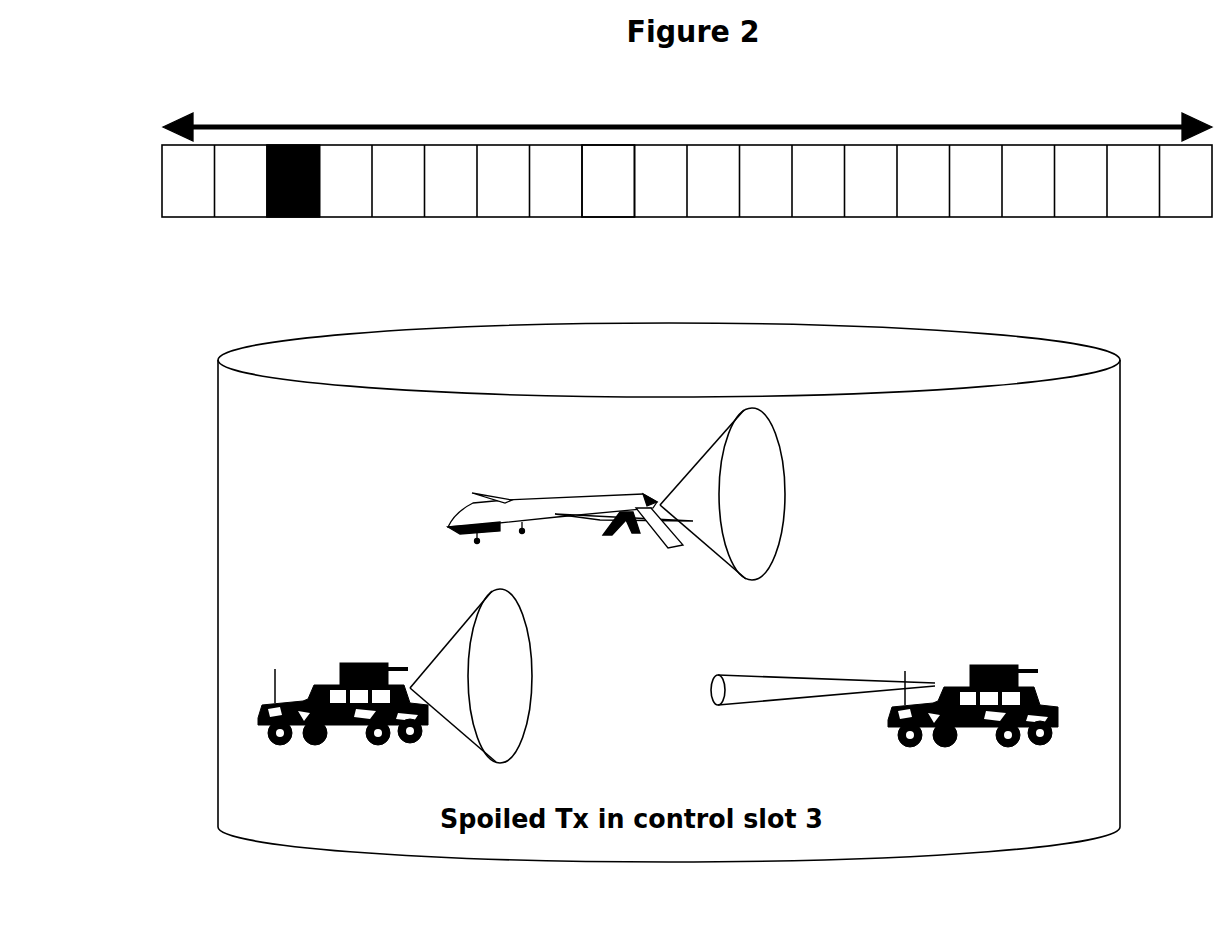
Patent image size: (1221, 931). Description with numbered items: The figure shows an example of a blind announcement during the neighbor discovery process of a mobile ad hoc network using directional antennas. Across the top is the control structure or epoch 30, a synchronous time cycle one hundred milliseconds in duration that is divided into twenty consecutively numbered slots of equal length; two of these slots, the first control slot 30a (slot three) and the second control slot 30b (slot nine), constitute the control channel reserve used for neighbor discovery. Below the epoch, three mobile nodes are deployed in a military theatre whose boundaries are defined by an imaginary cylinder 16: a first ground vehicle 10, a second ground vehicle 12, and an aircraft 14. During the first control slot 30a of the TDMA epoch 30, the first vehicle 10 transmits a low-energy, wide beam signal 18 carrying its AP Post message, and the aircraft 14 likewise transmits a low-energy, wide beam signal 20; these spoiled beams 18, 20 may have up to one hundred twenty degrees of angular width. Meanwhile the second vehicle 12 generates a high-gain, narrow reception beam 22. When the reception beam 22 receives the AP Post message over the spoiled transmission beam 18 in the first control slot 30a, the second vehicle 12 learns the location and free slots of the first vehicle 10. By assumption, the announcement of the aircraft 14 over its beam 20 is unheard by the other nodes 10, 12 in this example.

The first ground vehicle 10 is at (313, 680).
The second ground vehicle 12 is at (983, 728).
The aircraft 14 is at (553, 497).
The imaginary cylinder 16 is at (1121, 435).
The low-energy wide beam signal 18 is at (528, 650).
The low-energy wide beam signal 20 is at (783, 547).
The high-gain narrow reception beam 22 is at (803, 677).
The control structure 30 is at (1000, 122).
The first control slot 30a is at (293, 219).
The second control slot 30b is at (602, 220).